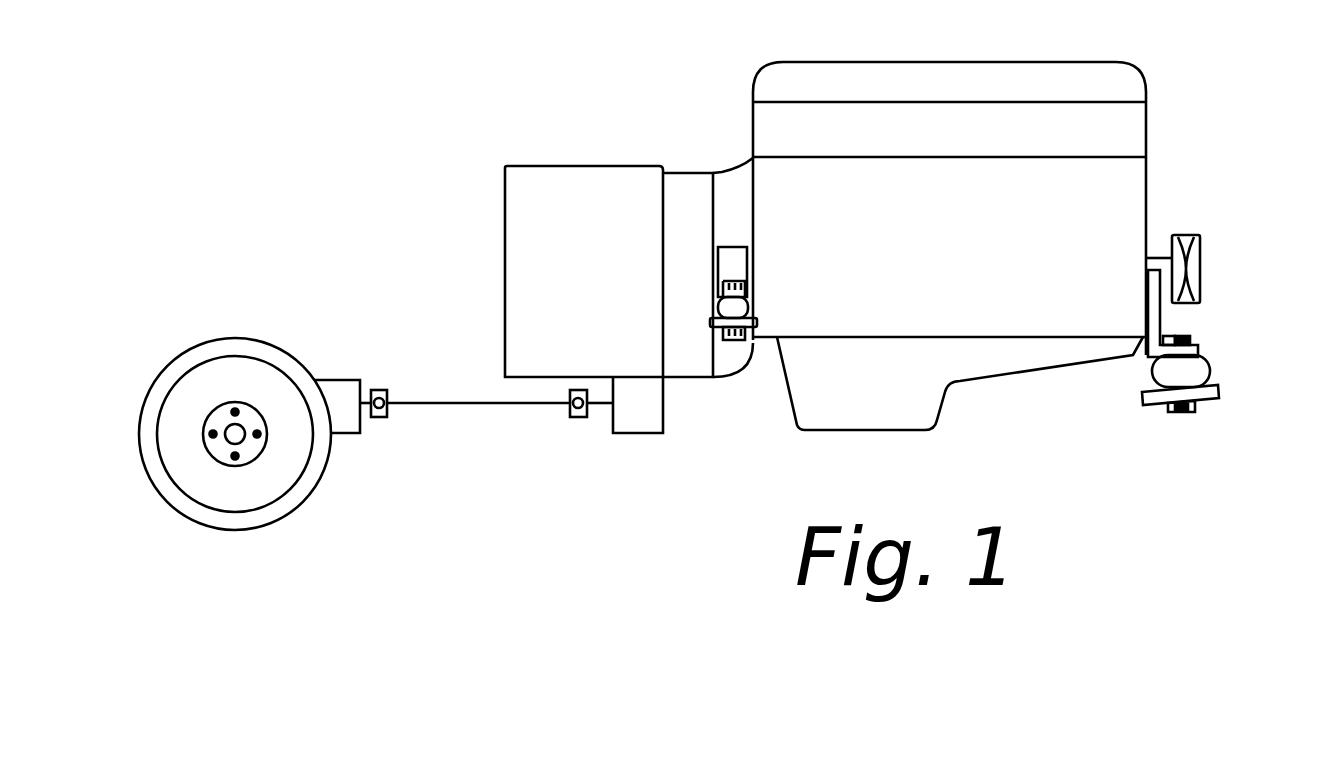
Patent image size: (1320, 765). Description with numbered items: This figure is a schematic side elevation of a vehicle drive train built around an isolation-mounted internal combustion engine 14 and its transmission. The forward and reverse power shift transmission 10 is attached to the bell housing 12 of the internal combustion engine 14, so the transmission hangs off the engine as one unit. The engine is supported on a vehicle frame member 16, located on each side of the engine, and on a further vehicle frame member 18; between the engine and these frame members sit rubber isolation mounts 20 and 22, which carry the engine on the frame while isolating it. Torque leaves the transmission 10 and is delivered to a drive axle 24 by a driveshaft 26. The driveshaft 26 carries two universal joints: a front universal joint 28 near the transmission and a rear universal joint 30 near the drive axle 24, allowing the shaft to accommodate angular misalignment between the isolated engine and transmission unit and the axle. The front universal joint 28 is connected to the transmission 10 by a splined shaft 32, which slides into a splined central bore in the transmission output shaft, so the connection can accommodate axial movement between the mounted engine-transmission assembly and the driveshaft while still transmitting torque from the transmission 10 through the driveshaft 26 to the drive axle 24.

The forward and reverse power shift transmission 10 is at (571, 158).
The bell housing 12 is at (727, 171).
The internal combustion engine 14 is at (1162, 122).
The vehicle frame member 16 is at (757, 322).
The vehicle frame member 18 is at (1218, 393).
The rubber isolation mount 20 is at (745, 306).
The rubber isolation mount 22 is at (1200, 366).
The drive axle 24 is at (204, 332).
The driveshaft 26 is at (489, 407).
The front universal joint 28 is at (580, 418).
The rear universal joint 30 is at (381, 417).
The splined shaft 32 is at (598, 404).